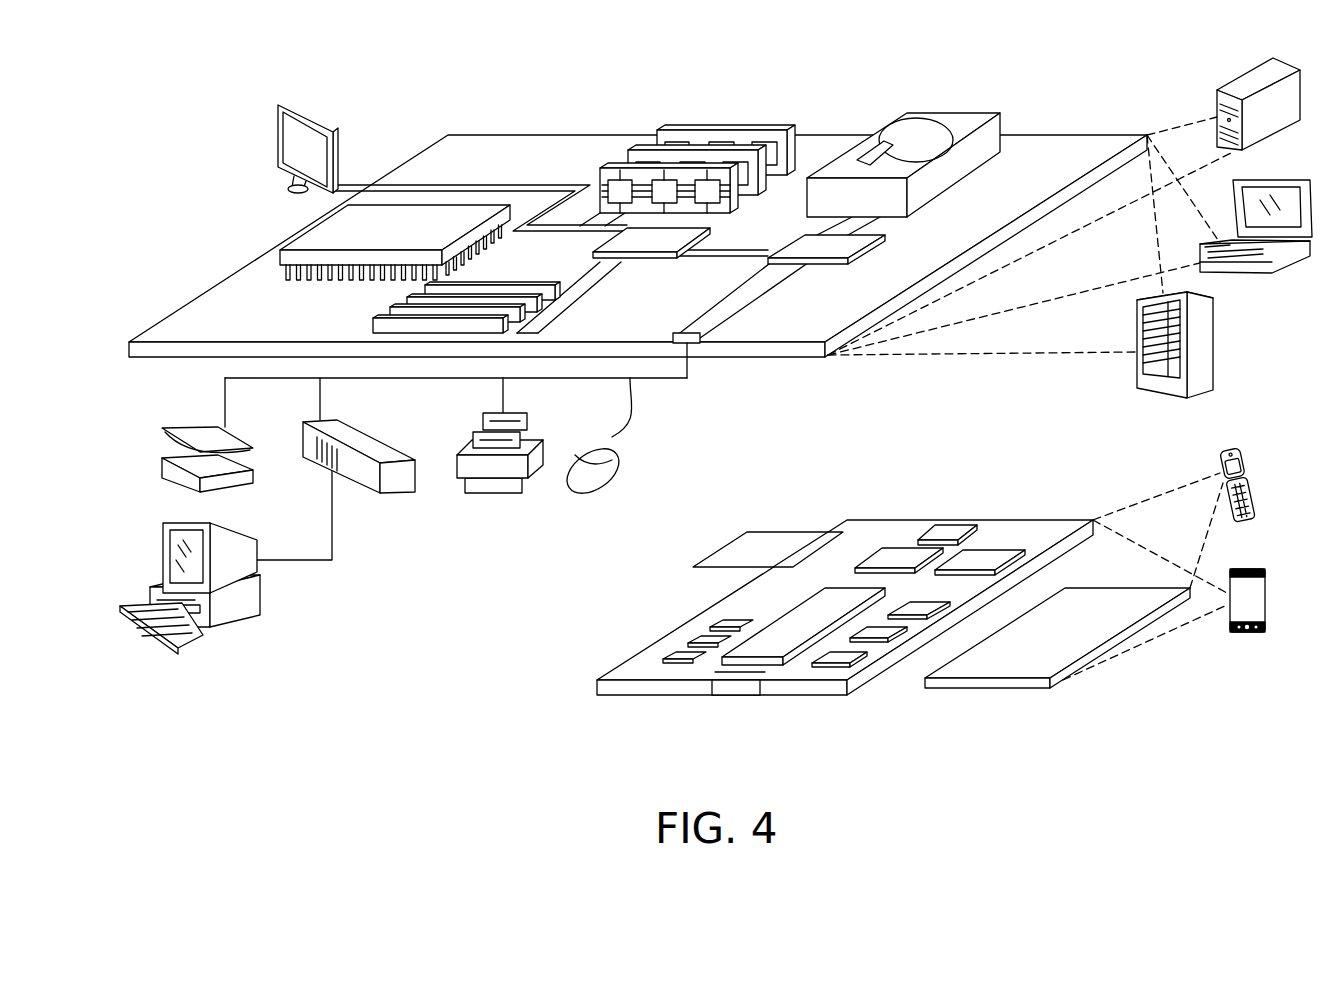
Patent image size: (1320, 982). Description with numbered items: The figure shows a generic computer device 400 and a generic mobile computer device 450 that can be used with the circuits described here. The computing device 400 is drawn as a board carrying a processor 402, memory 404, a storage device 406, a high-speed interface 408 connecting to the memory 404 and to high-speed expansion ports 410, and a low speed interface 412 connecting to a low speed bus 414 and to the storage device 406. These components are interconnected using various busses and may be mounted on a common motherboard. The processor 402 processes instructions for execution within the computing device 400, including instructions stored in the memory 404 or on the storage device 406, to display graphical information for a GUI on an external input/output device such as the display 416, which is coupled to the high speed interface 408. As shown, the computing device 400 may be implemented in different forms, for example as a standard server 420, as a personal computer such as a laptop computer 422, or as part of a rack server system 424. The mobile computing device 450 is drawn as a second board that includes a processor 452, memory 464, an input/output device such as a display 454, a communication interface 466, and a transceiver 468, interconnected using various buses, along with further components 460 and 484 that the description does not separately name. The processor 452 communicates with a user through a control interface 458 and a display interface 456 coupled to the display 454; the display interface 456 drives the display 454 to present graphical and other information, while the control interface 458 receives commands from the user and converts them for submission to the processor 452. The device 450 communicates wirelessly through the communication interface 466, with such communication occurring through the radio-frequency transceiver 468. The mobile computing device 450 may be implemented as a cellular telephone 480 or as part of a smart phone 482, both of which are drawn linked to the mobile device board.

The computer device 400 is at (400, 86).
The processor 402 is at (303, 233).
The memory 404 is at (722, 130).
The storage device 406 is at (941, 110).
The high-speed interface 408 is at (662, 253).
The high-speed expansion ports 410 is at (390, 306).
The low speed interface 412 is at (795, 240).
The low speed bus 414 is at (688, 330).
The display 416 is at (283, 110).
The standard server 420 is at (1234, 83).
The laptop computer 422 is at (1283, 177).
The rack server system 424 is at (1213, 343).
The mobile computer device 450 is at (1134, 691).
The processor 452 is at (775, 636).
The display 454 is at (1093, 600).
The display interface 456 is at (858, 655).
The control interface 458 is at (885, 633).
The component 460 is at (920, 606).
The memory 464 is at (690, 638).
The communication interface 466 is at (900, 550).
The transceiver 468 is at (990, 548).
The cellular telephone 480 is at (945, 530).
The smart phone 482 is at (827, 530).
The network interface 484 is at (752, 532).